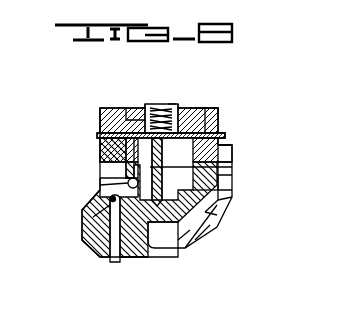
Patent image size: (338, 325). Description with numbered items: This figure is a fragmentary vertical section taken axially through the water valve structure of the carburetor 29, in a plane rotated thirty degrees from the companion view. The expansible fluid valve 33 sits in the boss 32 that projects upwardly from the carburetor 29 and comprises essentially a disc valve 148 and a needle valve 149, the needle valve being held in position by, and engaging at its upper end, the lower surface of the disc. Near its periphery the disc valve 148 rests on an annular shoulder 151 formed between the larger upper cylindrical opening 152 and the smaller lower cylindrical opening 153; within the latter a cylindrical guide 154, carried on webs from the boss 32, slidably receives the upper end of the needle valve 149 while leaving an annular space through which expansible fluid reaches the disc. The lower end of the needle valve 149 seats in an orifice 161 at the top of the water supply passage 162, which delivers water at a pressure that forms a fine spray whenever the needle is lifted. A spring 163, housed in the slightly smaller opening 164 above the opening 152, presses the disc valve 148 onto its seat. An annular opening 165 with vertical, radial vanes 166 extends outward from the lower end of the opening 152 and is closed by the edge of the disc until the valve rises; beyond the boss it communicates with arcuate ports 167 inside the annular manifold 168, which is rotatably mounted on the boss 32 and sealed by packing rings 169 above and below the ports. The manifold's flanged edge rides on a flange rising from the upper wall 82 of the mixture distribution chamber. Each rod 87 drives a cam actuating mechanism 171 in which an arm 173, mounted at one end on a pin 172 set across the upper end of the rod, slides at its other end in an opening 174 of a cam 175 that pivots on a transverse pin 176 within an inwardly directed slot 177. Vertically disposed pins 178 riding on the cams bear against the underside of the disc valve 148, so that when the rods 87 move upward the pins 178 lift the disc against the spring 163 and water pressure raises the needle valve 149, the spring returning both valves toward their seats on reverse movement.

The carburetor 29 is at (183, 240).
The boss 32 is at (202, 200).
The expansible fluid valve 33 is at (222, 213).
The upper wall of the mixture distribution chamber 82 is at (93, 217).
The rod 87 is at (110, 262).
The disc valve 148 is at (178, 106).
The needle valve 149 is at (218, 178).
The annular shoulder 151 is at (100, 133).
The upper cylindrical opening 152 is at (137, 106).
The lower cylindrical opening 153 is at (213, 165).
The cylindrical guide 154 is at (203, 108).
The orifice 161 is at (217, 215).
The water supply passage 162 is at (202, 230).
The spring 163 is at (165, 106).
The opening 164 is at (172, 106).
The annular opening 165 is at (143, 108).
The vanes 166 is at (218, 150).
The ports 167 is at (218, 132).
The annular manifold 168 is at (207, 108).
The packing rings 169 is at (100, 152).
The cam actuating mechanism 171 is at (100, 203).
The pivot 172 is at (128, 258).
The arm 173 is at (93, 230).
The opening 174 is at (128, 185).
The cam 175 is at (148, 254).
The pin 176 is at (97, 184).
The slot 177 is at (184, 236).
The pins 178 is at (126, 170).